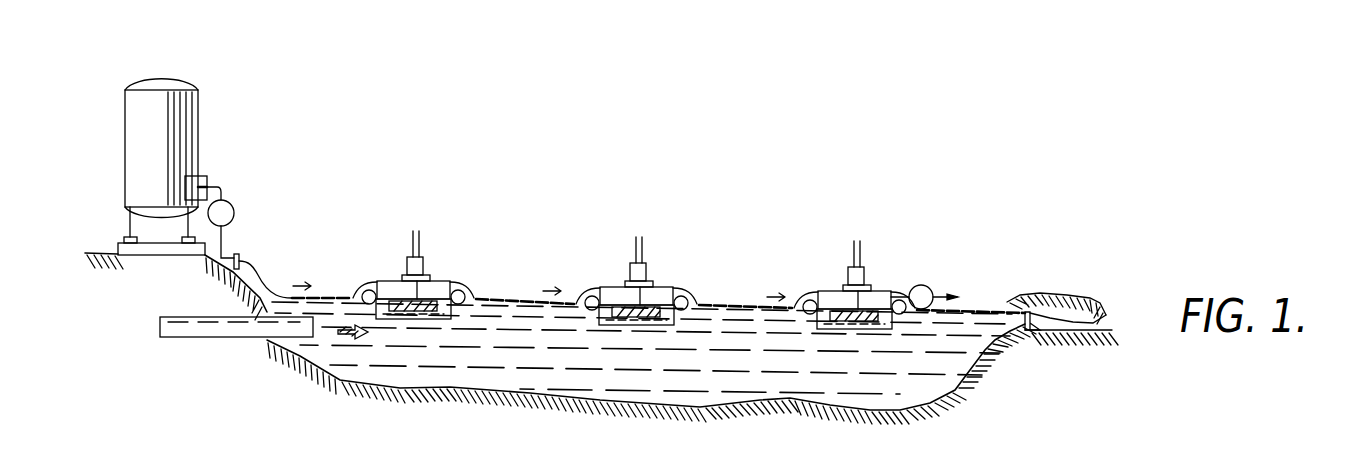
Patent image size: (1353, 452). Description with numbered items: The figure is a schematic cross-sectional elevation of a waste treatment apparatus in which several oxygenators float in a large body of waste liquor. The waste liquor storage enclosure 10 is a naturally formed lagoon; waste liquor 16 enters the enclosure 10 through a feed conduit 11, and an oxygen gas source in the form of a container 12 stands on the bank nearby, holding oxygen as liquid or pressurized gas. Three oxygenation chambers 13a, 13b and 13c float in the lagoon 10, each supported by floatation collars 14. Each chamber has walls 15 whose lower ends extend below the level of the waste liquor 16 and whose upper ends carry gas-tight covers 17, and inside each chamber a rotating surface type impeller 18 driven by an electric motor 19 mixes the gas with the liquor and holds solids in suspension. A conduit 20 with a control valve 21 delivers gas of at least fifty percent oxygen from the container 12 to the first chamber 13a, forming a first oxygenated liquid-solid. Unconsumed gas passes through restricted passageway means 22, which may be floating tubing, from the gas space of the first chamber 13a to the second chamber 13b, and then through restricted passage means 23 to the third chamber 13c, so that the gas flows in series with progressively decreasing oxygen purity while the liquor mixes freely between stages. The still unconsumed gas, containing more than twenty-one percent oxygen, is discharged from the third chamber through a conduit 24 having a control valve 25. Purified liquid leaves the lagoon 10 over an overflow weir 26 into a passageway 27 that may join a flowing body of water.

The waste liquor storage enclosure 10 is at (737, 410).
The conduit 11 is at (158, 322).
The container 12 is at (198, 94).
The first oxygenation chamber 13a is at (424, 272).
The second oxygenation chamber 13b is at (642, 278).
The third oxygenation chamber 13c is at (854, 285).
The floatation collars 14 is at (437, 274).
The walls 15 is at (648, 283).
The waste liquor 16 is at (545, 383).
The gas-tight covers 17 is at (449, 269).
The rotating surface type impellers 18 is at (672, 268).
The electric motors 19 is at (396, 253).
The conduit 20 is at (212, 184).
The control valve 21 is at (234, 211).
The restricted passageway means 22 is at (520, 300).
The restricted passage means 23 is at (744, 305).
The conduit 24 is at (896, 292).
The control valve 25 is at (930, 285).
The overflow weir 26 is at (1027, 312).
The passageway 27 is at (1077, 328).